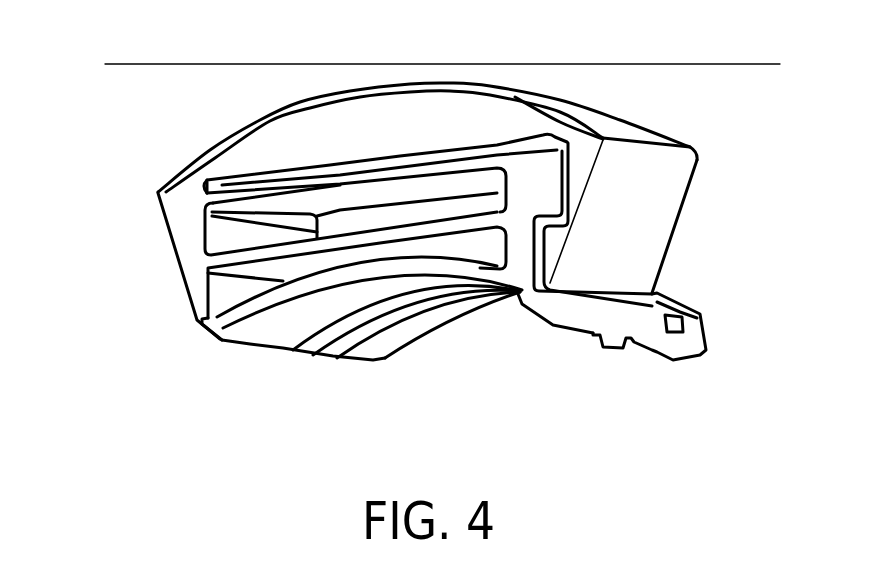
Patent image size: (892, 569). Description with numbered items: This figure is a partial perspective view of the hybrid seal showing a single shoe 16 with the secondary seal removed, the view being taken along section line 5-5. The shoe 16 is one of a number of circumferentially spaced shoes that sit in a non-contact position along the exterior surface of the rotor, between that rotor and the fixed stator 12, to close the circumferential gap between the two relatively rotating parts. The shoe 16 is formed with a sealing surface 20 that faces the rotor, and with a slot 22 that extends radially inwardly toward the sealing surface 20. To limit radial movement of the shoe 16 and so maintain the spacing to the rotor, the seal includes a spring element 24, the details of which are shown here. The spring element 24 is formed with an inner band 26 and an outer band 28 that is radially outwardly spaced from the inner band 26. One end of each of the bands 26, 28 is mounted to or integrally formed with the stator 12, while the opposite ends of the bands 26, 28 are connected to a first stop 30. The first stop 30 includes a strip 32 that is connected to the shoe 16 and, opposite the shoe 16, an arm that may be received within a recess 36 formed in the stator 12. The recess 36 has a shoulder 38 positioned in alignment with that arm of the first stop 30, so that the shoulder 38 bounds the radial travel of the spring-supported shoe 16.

The section line 5- 5 is at (132, 115).
The stator 12 is at (530, 97).
The shoe 16 is at (247, 354).
The sealing surface 20 is at (290, 313).
The slot 22 is at (676, 311).
The spring element 24 is at (233, 158).
The inner band 26 is at (232, 250).
The outer band 28 is at (317, 178).
The first stop 30 is at (538, 165).
The strip 32 is at (520, 292).
The recess 36 is at (570, 166).
The shoulder 38 is at (570, 165).